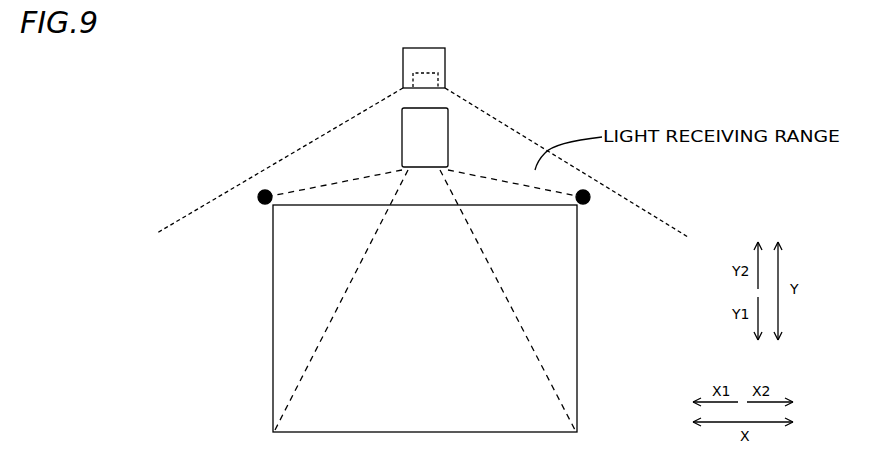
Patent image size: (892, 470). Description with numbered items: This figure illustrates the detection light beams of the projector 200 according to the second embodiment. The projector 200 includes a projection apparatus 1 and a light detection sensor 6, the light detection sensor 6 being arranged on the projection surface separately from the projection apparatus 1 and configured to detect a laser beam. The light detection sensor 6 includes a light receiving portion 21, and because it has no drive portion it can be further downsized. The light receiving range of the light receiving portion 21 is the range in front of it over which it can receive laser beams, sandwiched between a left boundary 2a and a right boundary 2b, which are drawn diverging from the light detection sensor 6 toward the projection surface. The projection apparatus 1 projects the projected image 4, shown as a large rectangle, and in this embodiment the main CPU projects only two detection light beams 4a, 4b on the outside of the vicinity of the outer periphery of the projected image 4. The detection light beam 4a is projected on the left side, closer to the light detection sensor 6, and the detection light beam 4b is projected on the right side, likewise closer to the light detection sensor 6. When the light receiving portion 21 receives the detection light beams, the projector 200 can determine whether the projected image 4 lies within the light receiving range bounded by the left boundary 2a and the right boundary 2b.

The light detection sensor 6 is at (433, 48).
The light receiving portion 21 is at (438, 80).
The projection apparatus 1 is at (448, 138).
The left boundary 2a is at (288, 153).
The right boundary 2b is at (533, 143).
The projector 200 is at (531, 87).
The detection light beam 4a is at (263, 204).
The detection light beam 4b is at (589, 203).
The projected image 4 is at (560, 318).